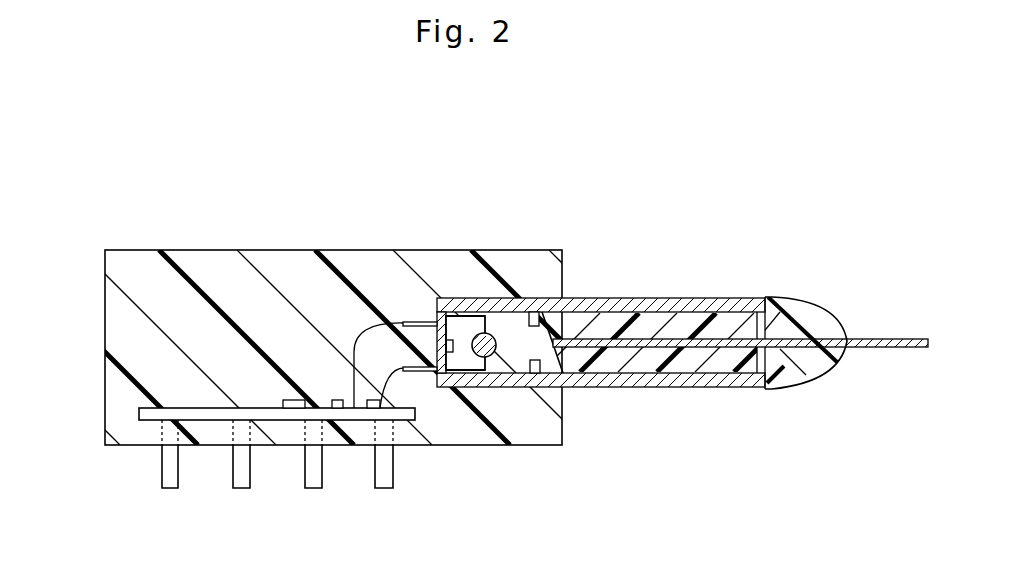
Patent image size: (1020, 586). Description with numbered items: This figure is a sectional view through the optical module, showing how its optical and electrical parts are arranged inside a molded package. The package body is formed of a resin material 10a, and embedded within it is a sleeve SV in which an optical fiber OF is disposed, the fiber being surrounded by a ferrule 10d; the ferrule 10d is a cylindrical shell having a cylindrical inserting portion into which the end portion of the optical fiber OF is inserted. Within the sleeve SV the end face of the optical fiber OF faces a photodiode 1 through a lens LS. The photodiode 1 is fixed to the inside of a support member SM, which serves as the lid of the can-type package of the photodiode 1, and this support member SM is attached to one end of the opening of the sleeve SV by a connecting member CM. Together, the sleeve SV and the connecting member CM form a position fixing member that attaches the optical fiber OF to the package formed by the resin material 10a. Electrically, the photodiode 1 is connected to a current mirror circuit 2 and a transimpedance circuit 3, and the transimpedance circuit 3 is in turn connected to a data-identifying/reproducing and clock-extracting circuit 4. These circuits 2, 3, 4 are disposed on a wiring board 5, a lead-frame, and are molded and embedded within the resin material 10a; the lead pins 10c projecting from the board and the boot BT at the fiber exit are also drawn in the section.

The photodiode 1 is at (452, 316).
The current mirror circuit 2 is at (338, 400).
The transimpedance circuit 3 is at (373, 400).
The data-identifying/reproducing and clock-extracting circuit 4 is at (294, 400).
The wiring board (lead-frame) 5 is at (276, 421).
The resin material 10a is at (115, 378).
The lead pins 10c is at (385, 490).
The ferrule 10d is at (655, 312).
The connecting member CM is at (484, 313).
The sleeve SV is at (549, 300).
The support member SM is at (441, 316).
The lens LS is at (493, 356).
The optical fiber OF is at (883, 338).
The boot BT is at (719, 392).